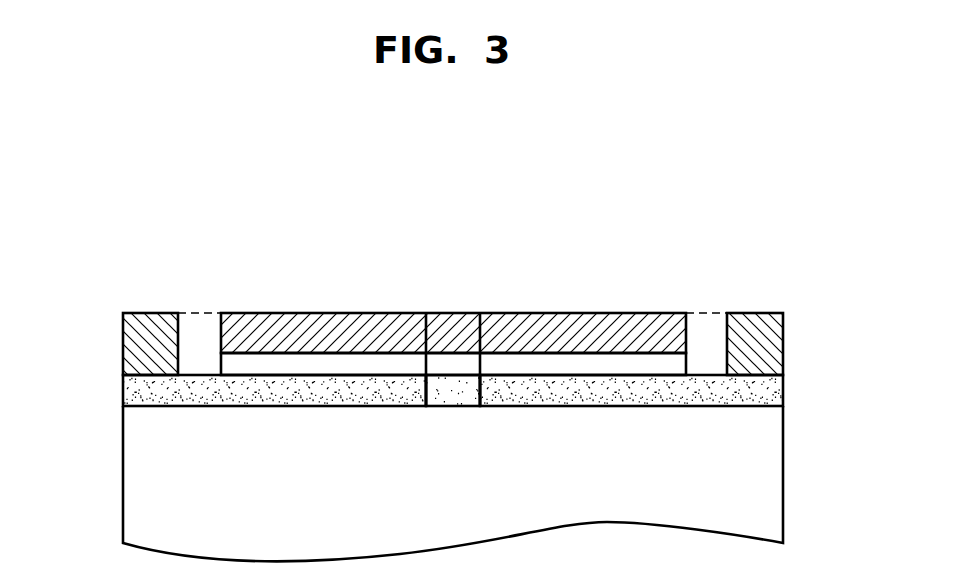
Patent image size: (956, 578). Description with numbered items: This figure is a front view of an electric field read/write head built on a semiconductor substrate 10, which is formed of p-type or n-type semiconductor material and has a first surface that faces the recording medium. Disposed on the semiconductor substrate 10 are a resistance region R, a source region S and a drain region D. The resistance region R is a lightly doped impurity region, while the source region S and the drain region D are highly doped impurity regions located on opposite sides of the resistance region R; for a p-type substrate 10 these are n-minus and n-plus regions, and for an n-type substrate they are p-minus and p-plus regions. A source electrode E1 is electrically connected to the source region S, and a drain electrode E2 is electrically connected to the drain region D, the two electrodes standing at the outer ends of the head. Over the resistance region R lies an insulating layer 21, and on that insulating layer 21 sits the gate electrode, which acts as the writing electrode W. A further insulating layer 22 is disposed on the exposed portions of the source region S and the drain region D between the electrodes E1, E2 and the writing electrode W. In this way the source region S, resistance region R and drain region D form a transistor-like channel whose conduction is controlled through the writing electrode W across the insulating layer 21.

The semiconductor substrate 10 is at (770, 488).
The source region S is at (185, 392).
The resistance region R is at (460, 397).
The drain region D is at (747, 393).
The source electrode E1 is at (145, 313).
The drain electrode E2 is at (757, 313).
The insulating layer 22 is at (202, 326).
The writing electrode W is at (452, 313).
The insulating layer 21 is at (465, 367).